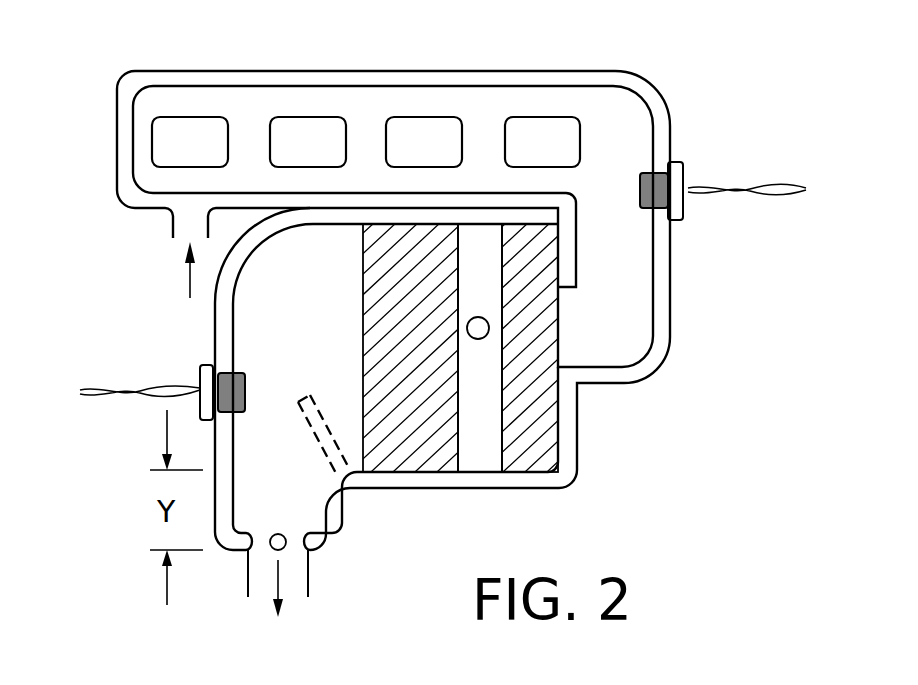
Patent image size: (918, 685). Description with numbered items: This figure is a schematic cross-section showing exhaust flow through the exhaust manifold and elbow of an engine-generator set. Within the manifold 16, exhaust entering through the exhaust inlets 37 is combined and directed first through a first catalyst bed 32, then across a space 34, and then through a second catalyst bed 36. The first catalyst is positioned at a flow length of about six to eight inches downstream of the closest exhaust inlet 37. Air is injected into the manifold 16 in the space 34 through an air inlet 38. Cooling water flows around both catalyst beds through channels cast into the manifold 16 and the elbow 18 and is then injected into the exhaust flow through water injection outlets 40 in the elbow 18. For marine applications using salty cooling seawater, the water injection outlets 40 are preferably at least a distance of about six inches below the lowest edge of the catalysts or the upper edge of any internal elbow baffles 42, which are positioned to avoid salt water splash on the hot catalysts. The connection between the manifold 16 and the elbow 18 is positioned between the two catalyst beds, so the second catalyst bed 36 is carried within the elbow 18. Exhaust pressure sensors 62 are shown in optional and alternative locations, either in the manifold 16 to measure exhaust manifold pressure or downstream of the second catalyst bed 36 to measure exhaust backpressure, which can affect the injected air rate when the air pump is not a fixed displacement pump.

The manifold 16 is at (398, 71).
The exhaust inlet 37 is at (540, 117).
The exhaust pressure sensor 62 is at (687, 177).
The elbow 18 is at (215, 334).
The first catalyst bed 32 is at (533, 432).
The second catalyst bed 36 is at (415, 443).
The space 34 is at (478, 457).
The air inlet 38 is at (489, 326).
The internal elbow baffles 42 is at (321, 414).
The water injection outlets 40 is at (282, 550).